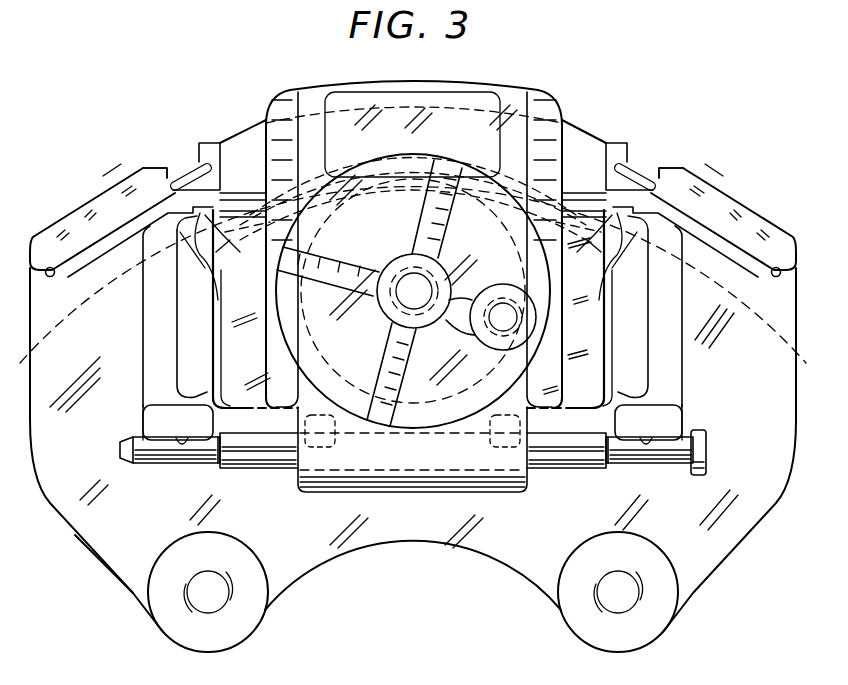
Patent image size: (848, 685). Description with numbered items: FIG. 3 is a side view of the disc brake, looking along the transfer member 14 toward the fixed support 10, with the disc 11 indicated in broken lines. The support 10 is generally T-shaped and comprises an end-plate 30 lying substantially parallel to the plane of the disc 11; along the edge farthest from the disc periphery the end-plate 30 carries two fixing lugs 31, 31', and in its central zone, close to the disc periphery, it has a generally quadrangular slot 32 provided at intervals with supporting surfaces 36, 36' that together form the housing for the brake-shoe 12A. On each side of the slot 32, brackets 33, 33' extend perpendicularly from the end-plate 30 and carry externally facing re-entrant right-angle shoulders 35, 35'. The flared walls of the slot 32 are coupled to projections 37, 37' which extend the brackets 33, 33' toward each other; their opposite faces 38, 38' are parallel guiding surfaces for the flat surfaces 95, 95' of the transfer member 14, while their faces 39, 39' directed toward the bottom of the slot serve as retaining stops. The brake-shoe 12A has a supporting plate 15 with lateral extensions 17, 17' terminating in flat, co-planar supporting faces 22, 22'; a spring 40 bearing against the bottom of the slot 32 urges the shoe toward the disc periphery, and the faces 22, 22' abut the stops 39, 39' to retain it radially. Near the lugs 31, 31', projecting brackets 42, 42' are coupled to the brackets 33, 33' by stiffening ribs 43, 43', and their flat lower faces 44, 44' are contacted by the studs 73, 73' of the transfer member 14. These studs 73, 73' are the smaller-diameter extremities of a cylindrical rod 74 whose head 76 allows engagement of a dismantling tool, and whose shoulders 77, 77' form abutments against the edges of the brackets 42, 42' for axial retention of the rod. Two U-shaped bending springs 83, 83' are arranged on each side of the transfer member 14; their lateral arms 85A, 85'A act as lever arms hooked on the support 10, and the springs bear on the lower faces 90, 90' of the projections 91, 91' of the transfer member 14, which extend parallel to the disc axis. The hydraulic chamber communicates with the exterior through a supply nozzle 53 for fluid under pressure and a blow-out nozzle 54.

The support 10 is at (93, 558).
The disc 11 is at (64, 330).
The brake-shoe 12A is at (618, 363).
The transfer member 14 is at (546, 82).
The supporting plate 15 is at (573, 362).
The extension 17 is at (192, 307).
The extension 17' is at (629, 307).
The supporting face 22 is at (140, 245).
The supporting face 22' is at (685, 244).
The end-plate 30 is at (127, 580).
The fixing lug 31 is at (201, 600).
The fixing lug 31' is at (633, 600).
The slot 32 is at (226, 376).
The bracket 33 is at (102, 219).
The bracket 33' is at (724, 219).
The shoulder 35 is at (144, 158).
The shoulder 35' is at (691, 158).
The supporting surface 36 is at (240, 355).
The supporting surface 36' is at (588, 355).
The projection 37 is at (243, 138).
The projection 37' is at (585, 134).
The guiding surface 38 is at (259, 168).
The guiding surface 38' is at (566, 168).
The retaining stop 39 is at (219, 256).
The retaining stop 39' is at (603, 256).
The spring 40 is at (347, 418).
The projecting bracket 42 is at (122, 419).
The projecting bracket 42' is at (708, 419).
The stiffening rib 43 is at (123, 316).
The stiffening rib 43' is at (706, 316).
The lower face 44 is at (178, 424).
The lower face 44' is at (648, 424).
The supply nozzle 53 is at (405, 290).
The blow-out nozzle 54 is at (500, 312).
The stud 73 is at (175, 468).
The stud 73' is at (650, 468).
The cylindrical rod 74 is at (152, 470).
The head 76 is at (698, 477).
The shoulder 77 is at (212, 477).
The shoulder 77' is at (604, 477).
The bending spring 83 is at (97, 181).
The bending spring 83' is at (734, 181).
The lateral arm 85A is at (65, 276).
The lateral arm 85'A is at (769, 288).
The lower face 90 is at (186, 145).
The lower face 90' is at (655, 150).
The projection 91 is at (200, 135).
The projection 91' is at (635, 138).
The flat surface 95 is at (259, 195).
The flat surface 95' is at (566, 195).